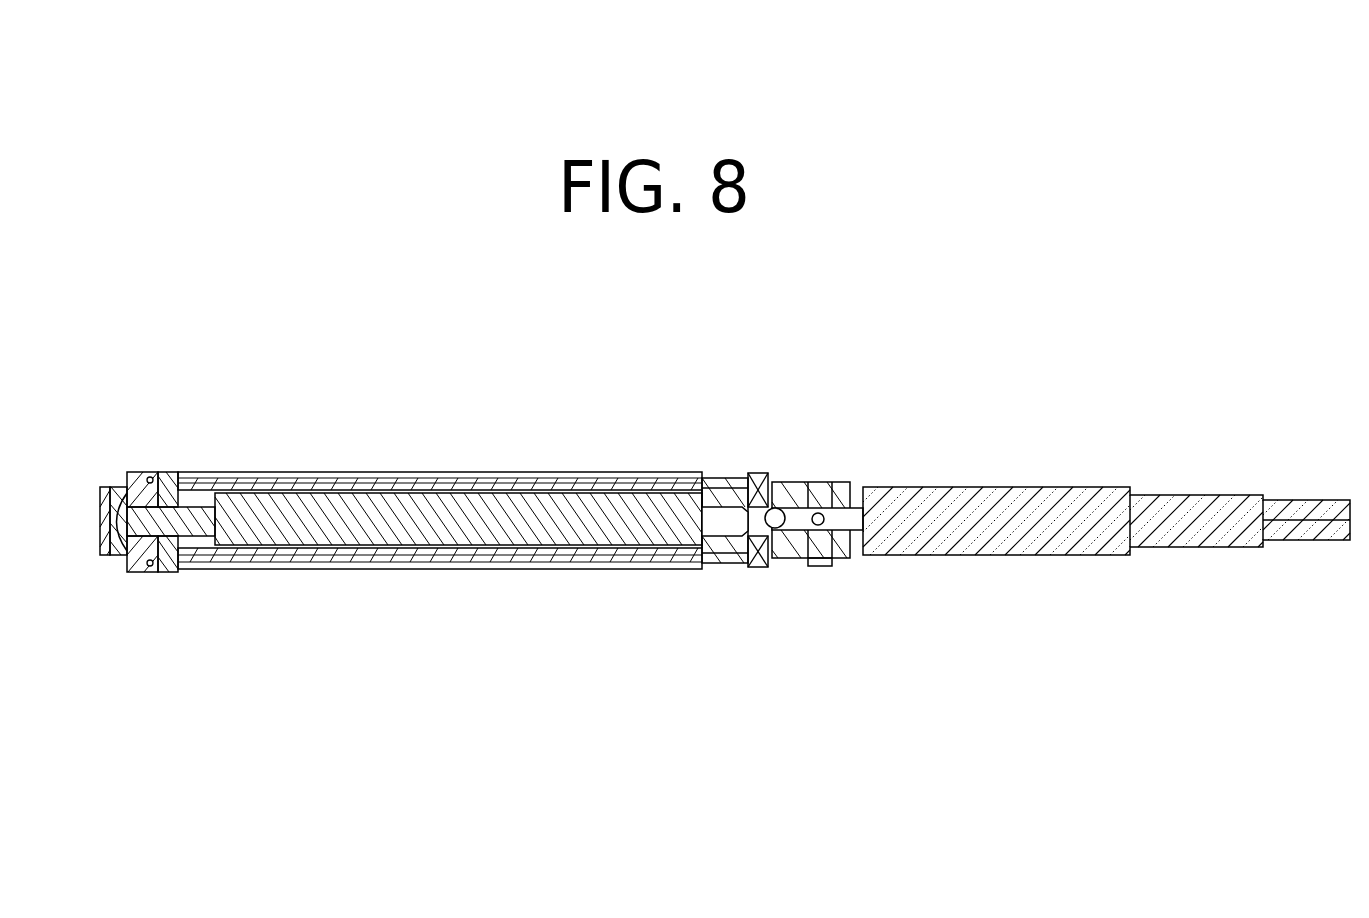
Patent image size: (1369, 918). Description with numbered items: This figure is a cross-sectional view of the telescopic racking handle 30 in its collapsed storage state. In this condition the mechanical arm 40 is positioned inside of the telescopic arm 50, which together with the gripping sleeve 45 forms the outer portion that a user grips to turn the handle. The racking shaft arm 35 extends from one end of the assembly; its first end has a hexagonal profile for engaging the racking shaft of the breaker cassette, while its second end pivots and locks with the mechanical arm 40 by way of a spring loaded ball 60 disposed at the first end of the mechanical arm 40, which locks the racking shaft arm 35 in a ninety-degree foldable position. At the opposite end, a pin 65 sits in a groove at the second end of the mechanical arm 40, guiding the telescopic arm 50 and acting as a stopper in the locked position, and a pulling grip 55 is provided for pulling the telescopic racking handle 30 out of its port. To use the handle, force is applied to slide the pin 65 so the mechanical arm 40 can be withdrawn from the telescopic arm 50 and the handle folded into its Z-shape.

The telescopic racking handle 30 is at (270, 323).
The racking shaft arm 35 is at (1032, 500).
The mechanical arm 40 is at (535, 517).
The gripping sleeve 45 is at (727, 478).
The telescopic arm 50 is at (280, 476).
The pulling grip 55 is at (119, 490).
The spring loaded ball 60 is at (779, 510).
The pin 65 is at (162, 573).